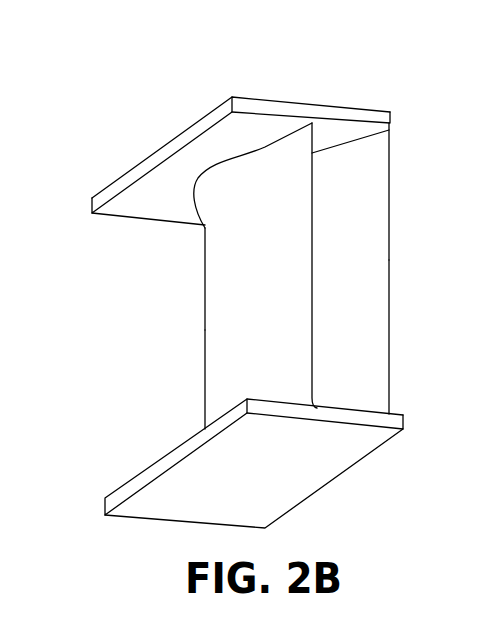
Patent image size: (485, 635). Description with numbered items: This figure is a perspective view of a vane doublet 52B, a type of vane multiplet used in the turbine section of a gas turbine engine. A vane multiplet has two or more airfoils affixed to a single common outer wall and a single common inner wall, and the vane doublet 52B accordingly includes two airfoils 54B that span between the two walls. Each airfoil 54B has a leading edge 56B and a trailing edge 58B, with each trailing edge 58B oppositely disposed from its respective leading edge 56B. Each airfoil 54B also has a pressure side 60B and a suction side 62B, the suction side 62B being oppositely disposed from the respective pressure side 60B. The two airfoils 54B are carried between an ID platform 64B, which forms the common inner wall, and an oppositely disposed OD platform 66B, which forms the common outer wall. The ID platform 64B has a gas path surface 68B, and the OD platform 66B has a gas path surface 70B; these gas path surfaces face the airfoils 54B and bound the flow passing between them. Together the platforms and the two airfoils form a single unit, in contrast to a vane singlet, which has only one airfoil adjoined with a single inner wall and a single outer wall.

The vane doublet 52B is at (172, 104).
The airfoil 54B is at (291, 175).
The leading edge 56B is at (205, 285).
The trailing edge 58B is at (313, 320).
The pressure side 60B is at (390, 222).
The suction side 62B is at (212, 357).
The ID platform 64B is at (162, 452).
The OD platform 66B is at (111, 179).
The gas path surface 68B is at (368, 412).
The gas path surface 70B is at (115, 211).